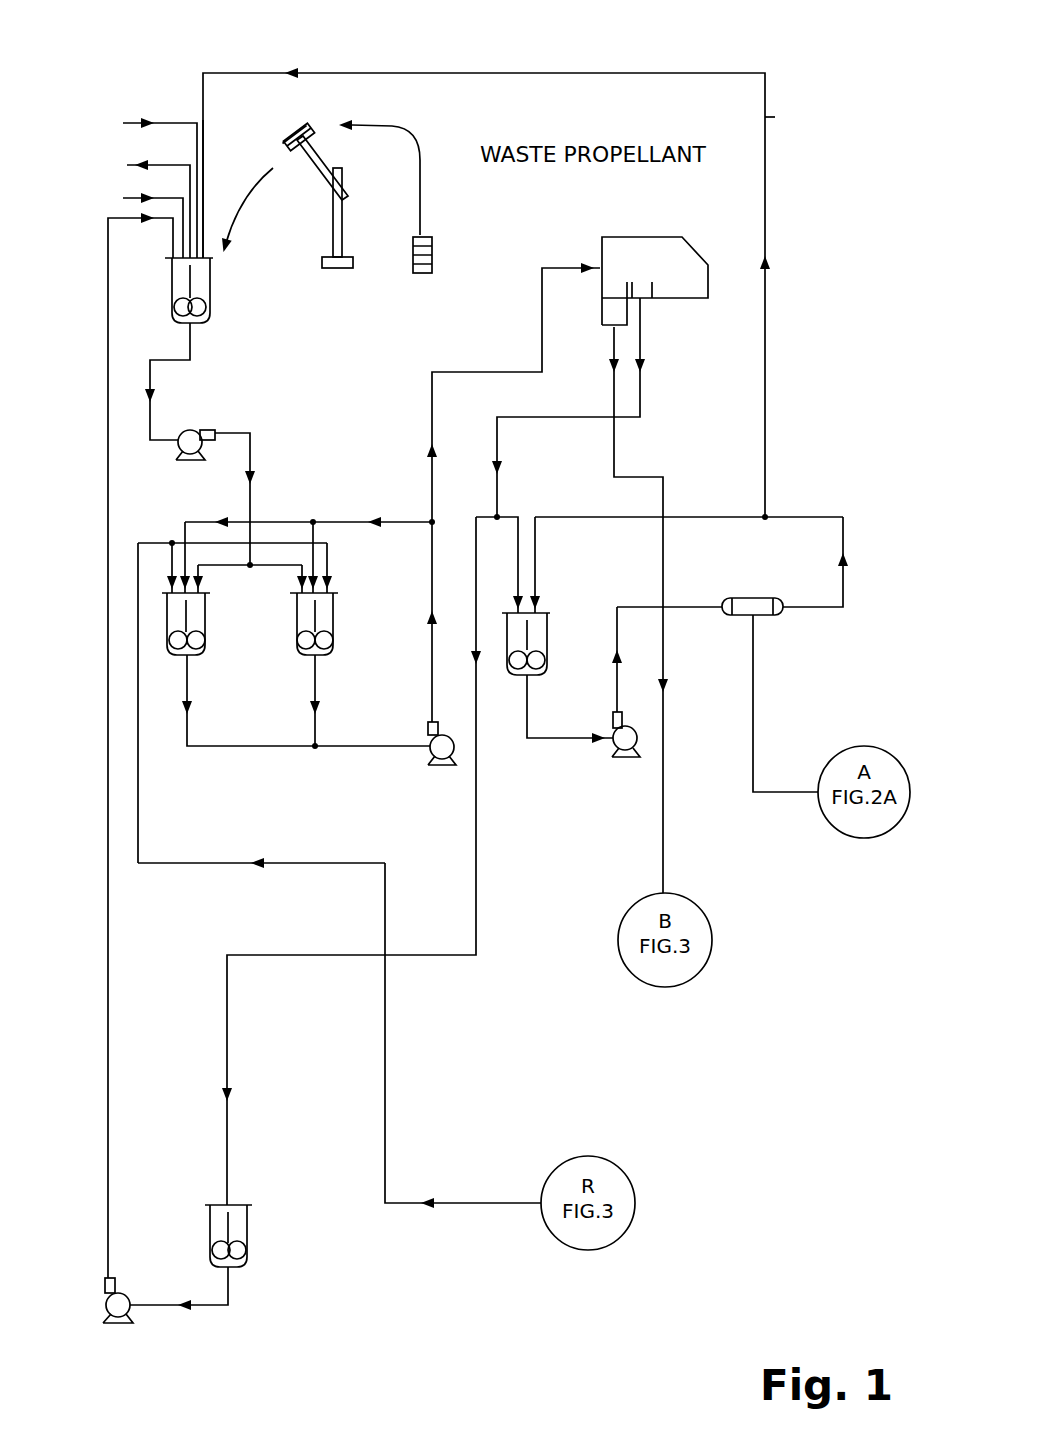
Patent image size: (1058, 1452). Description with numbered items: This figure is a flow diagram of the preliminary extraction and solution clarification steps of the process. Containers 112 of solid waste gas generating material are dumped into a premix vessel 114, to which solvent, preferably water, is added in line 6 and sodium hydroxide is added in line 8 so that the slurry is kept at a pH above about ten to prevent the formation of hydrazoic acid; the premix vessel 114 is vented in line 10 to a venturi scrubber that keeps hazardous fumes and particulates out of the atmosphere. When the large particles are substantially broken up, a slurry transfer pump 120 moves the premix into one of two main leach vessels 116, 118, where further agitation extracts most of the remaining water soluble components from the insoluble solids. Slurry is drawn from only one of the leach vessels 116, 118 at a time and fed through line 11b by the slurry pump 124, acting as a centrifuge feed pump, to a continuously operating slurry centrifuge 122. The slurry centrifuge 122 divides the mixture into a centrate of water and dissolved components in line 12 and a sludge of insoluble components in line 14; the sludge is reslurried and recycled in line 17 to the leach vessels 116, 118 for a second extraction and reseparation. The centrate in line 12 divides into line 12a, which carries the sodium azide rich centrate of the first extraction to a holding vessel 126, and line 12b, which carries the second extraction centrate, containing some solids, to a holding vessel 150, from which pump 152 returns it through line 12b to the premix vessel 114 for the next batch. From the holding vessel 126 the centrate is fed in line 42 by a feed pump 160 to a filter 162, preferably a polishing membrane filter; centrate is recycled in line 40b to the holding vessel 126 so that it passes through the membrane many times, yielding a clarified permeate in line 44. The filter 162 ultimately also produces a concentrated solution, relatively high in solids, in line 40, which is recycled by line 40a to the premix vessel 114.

The solvent feed line 6 is at (175, 122).
The vent line 10 is at (157, 163).
The sodium hydroxide feed line 8 is at (170, 198).
The premix vessel 114 is at (198, 280).
The containers 112 is at (420, 272).
The slurry centrifuge 122 is at (693, 268).
The sludge stream line 14 is at (614, 405).
The centrate line 12 is at (640, 405).
The slurry feed line 11b is at (432, 425).
The first-extraction centrate line 12a is at (512, 515).
The second-extraction centrate recycle line 12b is at (476, 830).
The concentrated solution line 40 is at (843, 577).
The concentrate recycle line 40a is at (765, 408).
The centrate recycle line 40b is at (690, 517).
The filter 162 is at (783, 598).
The clarified permeate line 44 is at (753, 738).
The holding vessel 126 is at (547, 655).
The filter feed line 42 is at (605, 750).
The feed pump 160 is at (630, 757).
The slurry transfer pump 120 is at (195, 437).
The main leach vessel 116 is at (187, 613).
The main leach vessel 118 is at (327, 620).
The slurry pump 124 is at (445, 765).
The reslurried sludge recycle line 17 is at (385, 1137).
The holding vessel 150 is at (242, 1230).
The pump 152 is at (112, 1323).